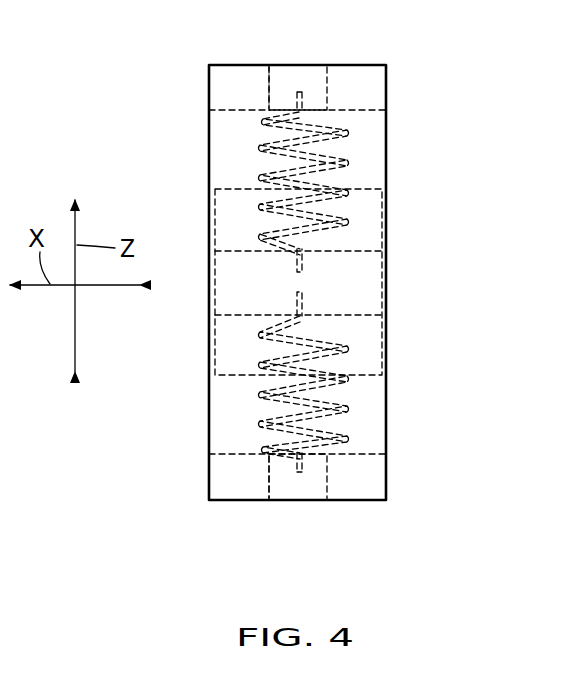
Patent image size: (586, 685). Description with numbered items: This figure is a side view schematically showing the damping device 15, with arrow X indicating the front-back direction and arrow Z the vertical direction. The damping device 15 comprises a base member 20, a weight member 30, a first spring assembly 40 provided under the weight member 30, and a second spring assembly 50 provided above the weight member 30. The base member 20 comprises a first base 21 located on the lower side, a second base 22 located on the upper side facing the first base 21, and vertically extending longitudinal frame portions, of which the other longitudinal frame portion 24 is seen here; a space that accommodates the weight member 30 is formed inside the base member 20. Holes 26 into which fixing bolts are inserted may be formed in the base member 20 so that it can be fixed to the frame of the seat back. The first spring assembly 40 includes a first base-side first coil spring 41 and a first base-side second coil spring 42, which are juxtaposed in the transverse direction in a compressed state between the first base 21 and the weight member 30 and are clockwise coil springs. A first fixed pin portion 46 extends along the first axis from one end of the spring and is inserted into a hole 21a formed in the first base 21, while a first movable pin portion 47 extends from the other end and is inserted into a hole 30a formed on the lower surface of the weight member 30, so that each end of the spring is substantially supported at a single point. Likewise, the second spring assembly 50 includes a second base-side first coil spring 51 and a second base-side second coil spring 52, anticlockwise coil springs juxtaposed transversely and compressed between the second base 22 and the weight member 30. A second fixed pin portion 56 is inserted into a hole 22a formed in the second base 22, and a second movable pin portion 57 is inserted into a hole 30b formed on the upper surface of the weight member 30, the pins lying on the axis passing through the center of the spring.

The damping device 15 is at (103, 92).
The base member 20 is at (390, 90).
The first base 21 is at (217, 478).
The hole 21a is at (303, 460).
The second base 22 is at (220, 86).
The hole 22a is at (302, 100).
The other longitudinal frame portion 24 is at (213, 350).
The holes 26 is at (270, 83).
The weight member 30 is at (343, 252).
The hole 30a is at (303, 301).
The hole 30b is at (303, 259).
The first spring assembly 40 is at (243, 419).
The first base-side first coil spring 41 is at (369, 387).
The first base-side second coil spring 42 is at (330, 416).
The first fixed pin portion 46 is at (300, 472).
The first movable pin portion 47 is at (294, 300).
The second spring assembly 50 is at (243, 153).
The second base-side first coil spring 51 is at (369, 183).
The second base-side second coil spring 52 is at (325, 153).
The second fixed pin portion 56 is at (300, 94).
The second movable pin portion 57 is at (294, 260).